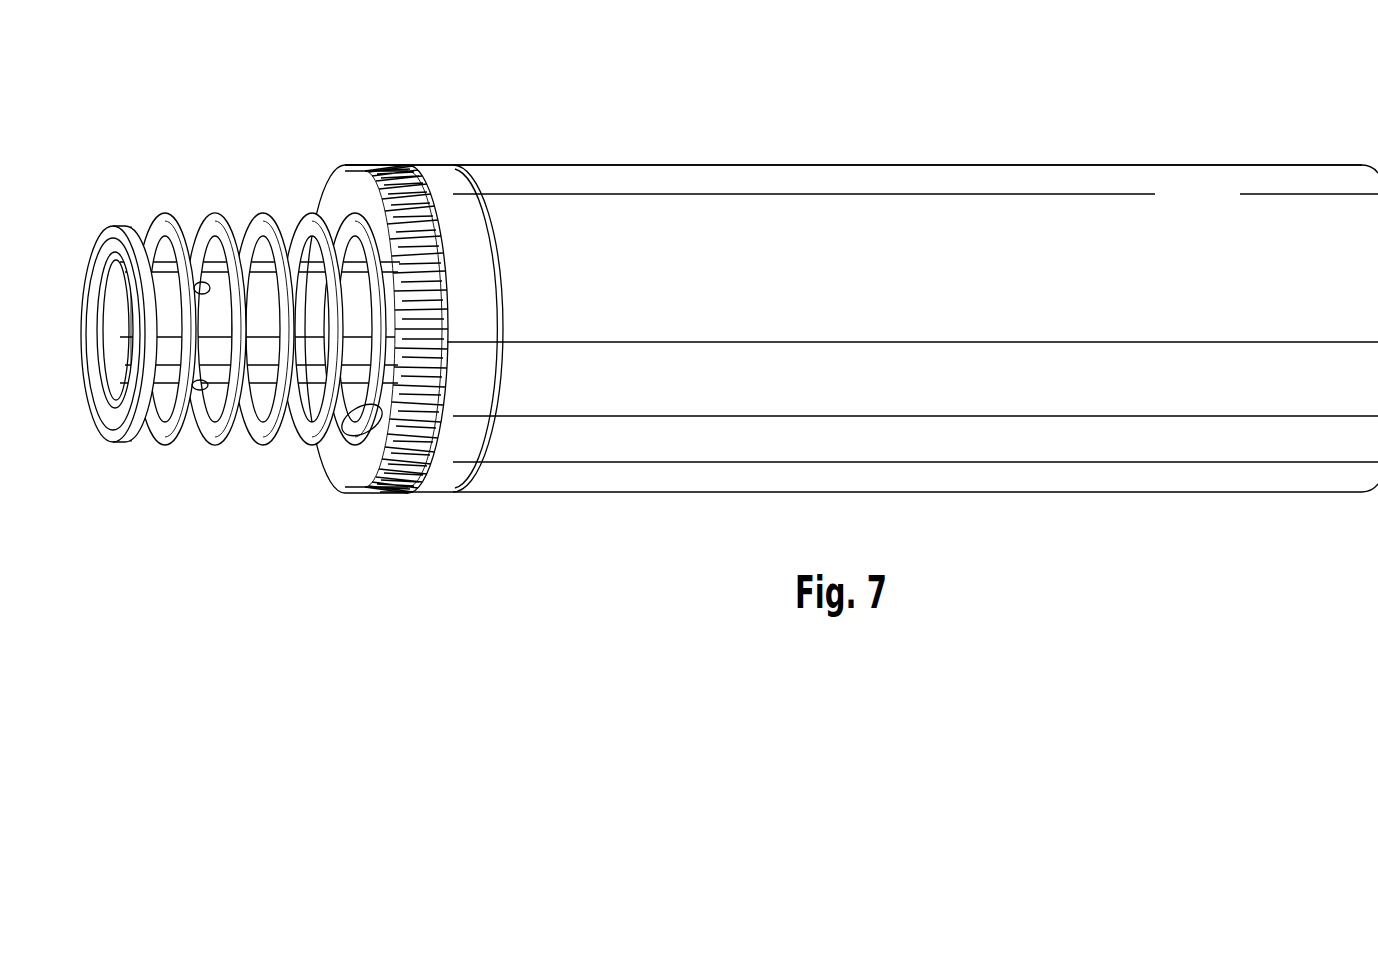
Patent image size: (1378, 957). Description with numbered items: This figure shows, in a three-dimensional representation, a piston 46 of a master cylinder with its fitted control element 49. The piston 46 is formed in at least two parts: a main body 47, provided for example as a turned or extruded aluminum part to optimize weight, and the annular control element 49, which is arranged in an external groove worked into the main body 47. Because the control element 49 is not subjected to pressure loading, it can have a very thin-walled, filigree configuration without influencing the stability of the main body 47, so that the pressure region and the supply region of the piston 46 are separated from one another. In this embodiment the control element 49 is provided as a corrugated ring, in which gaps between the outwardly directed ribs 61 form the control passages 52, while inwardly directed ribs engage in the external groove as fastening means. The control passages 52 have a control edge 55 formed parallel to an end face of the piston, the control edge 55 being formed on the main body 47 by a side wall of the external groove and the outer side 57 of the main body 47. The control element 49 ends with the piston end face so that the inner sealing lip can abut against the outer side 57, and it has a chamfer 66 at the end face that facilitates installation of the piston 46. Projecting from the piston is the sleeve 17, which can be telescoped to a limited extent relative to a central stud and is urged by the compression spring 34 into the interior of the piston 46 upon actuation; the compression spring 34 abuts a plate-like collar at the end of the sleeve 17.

The sleeve 17 is at (252, 353).
The compression spring 34 is at (212, 228).
The piston 46 is at (861, 262).
The main body 47 is at (1188, 232).
The control element 49 is at (432, 320).
The control passages 52 is at (433, 303).
The control edge 55 is at (438, 408).
The outer side 57 is at (998, 158).
The outwardly directed ribs 61 is at (432, 240).
The chamfer 66 is at (362, 425).